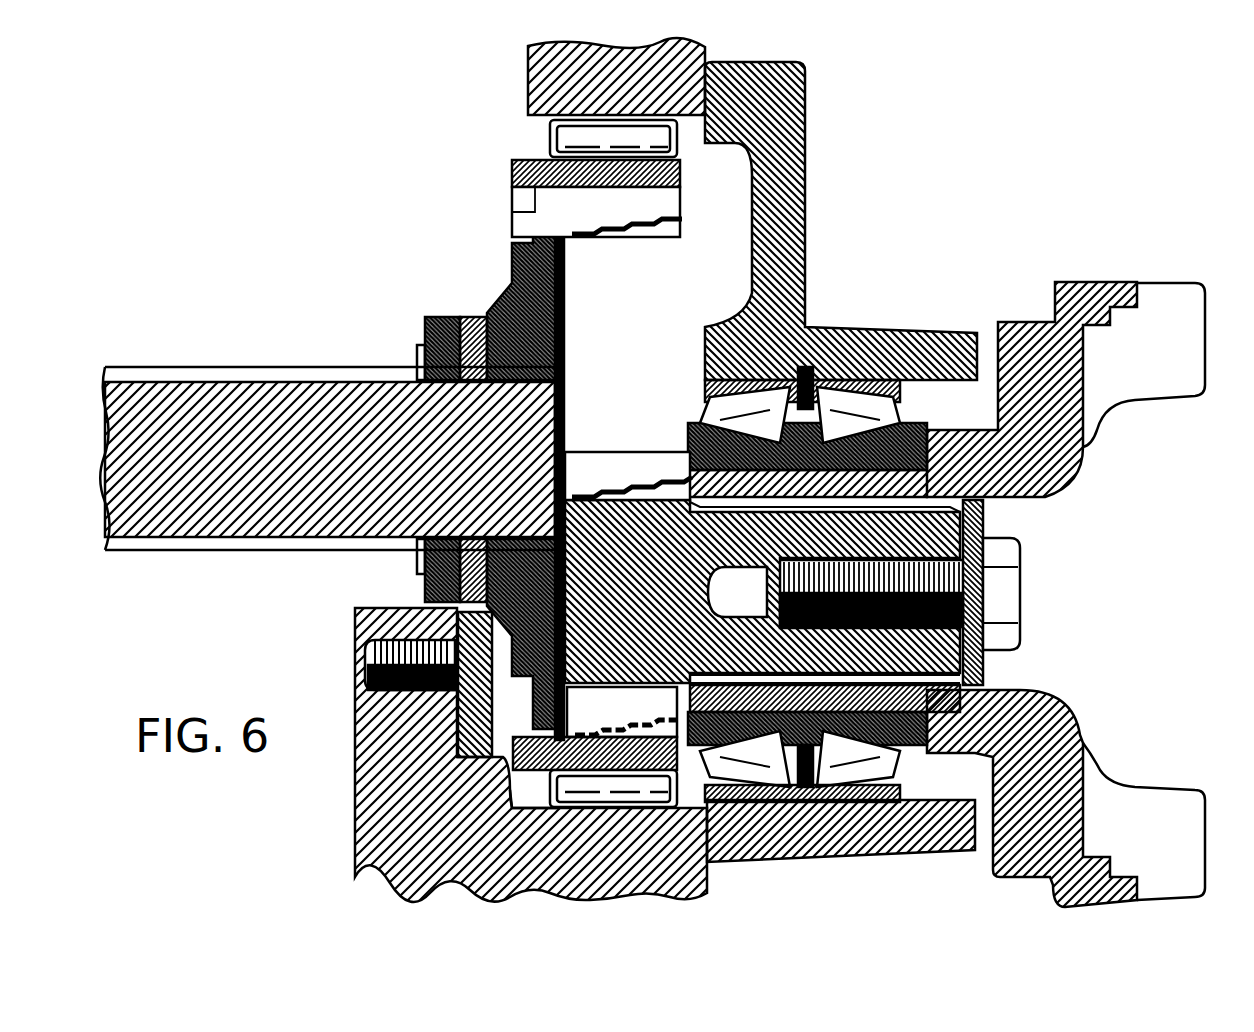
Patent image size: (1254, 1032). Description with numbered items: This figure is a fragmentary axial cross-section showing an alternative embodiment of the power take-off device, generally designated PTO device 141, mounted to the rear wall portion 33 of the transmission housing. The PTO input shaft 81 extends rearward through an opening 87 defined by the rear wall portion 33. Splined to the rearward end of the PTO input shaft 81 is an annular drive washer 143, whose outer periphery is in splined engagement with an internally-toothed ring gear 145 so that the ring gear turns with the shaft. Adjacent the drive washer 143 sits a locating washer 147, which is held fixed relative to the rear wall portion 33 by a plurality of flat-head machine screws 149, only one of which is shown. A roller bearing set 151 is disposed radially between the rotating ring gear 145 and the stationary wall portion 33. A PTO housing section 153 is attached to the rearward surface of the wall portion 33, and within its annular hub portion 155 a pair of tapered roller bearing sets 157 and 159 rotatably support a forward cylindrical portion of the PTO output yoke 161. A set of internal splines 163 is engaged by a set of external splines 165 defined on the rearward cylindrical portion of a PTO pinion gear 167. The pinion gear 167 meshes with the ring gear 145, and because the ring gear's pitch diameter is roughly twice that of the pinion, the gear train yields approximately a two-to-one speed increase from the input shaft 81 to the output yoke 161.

The rear wall portion 33 is at (540, 78).
The PTO input shaft 81 is at (262, 395).
The opening 87 is at (527, 803).
The PTO device 141 is at (943, 212).
The annular drive washer 143 is at (515, 290).
The internally-toothed ring gear 145 is at (515, 174).
The locating washer 147 is at (466, 574).
The flat-head machine screws 149 is at (372, 651).
The roller bearing set 151 is at (602, 800).
The PTO housing section 153 is at (795, 100).
The annular hub portion 155 is at (835, 850).
The tapered roller bearing set 157 is at (704, 407).
The tapered roller bearing set 159 is at (905, 452).
The PTO output yoke 161 is at (1085, 292).
The internal splines 163 is at (820, 512).
The external splines 165 is at (746, 677).
The PTO pinion gear 167 is at (588, 470).